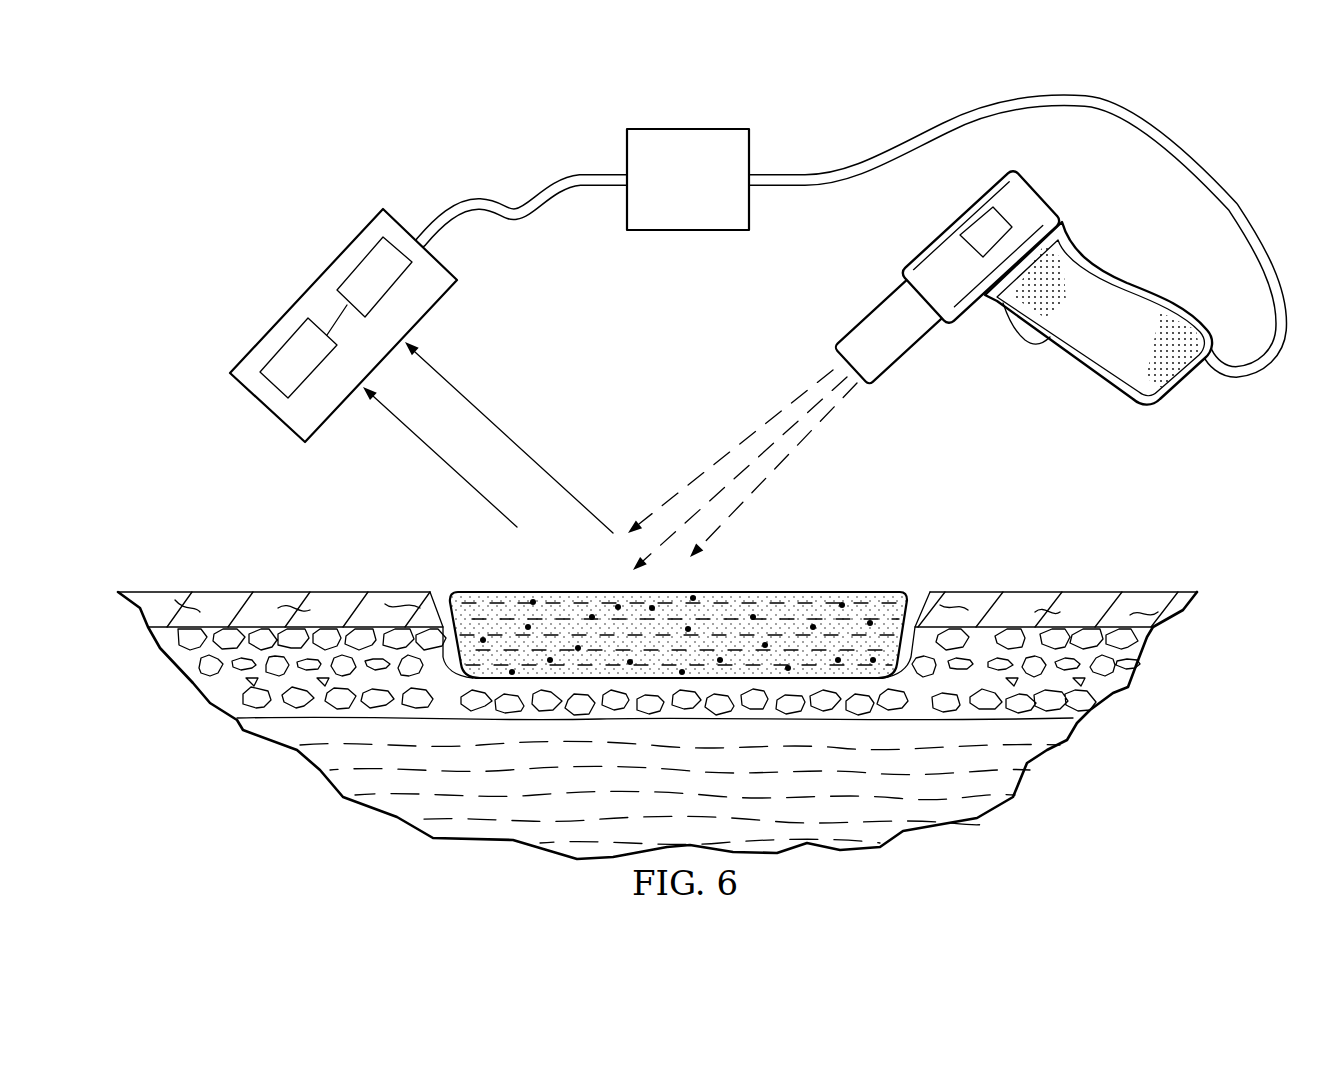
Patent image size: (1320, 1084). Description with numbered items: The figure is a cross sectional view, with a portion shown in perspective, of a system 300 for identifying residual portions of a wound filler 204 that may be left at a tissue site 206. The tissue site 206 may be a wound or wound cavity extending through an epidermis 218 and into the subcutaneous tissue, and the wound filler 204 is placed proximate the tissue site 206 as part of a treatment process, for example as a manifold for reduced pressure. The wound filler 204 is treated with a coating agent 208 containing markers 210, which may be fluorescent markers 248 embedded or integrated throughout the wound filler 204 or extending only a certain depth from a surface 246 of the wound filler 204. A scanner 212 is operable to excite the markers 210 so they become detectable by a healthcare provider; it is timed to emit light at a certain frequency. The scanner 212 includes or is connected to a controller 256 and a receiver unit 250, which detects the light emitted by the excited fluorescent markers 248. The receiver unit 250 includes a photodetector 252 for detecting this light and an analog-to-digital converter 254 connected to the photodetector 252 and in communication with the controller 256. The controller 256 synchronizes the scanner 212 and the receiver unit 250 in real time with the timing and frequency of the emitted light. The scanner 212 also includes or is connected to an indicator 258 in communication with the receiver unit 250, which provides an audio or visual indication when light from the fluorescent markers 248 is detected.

The system 300 is at (325, 537).
The receiver unit 250 is at (405, 368).
The photodetector 252 is at (285, 357).
The analog-to-digital converter 254 is at (368, 265).
The controller 256 is at (668, 192).
The scanner 212 is at (851, 335).
The indicator 258 is at (985, 228).
The wound filler 204 is at (444, 588).
The coating agent 208 is at (488, 590).
The fluorescent markers 248 is at (528, 590).
The surface 246 is at (553, 563).
The markers 210 is at (515, 672).
The tissue site 206 is at (905, 672).
The epidermis 218 is at (1087, 592).